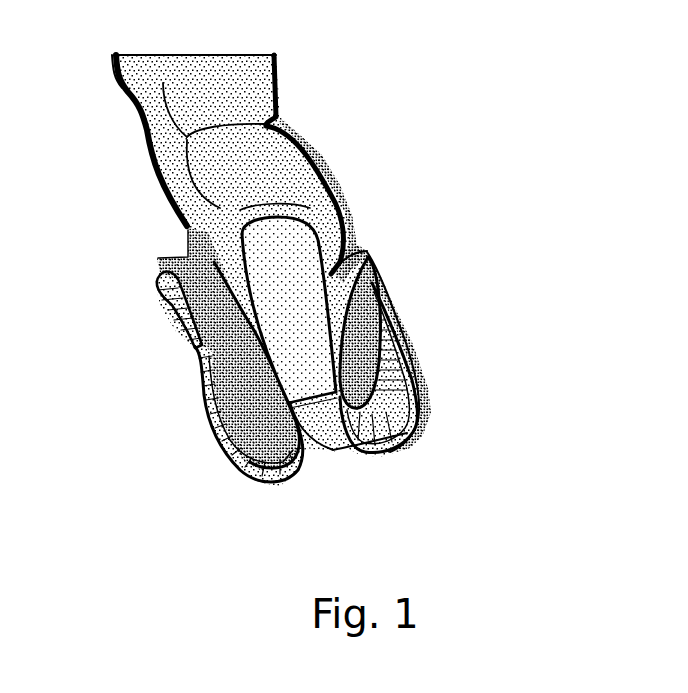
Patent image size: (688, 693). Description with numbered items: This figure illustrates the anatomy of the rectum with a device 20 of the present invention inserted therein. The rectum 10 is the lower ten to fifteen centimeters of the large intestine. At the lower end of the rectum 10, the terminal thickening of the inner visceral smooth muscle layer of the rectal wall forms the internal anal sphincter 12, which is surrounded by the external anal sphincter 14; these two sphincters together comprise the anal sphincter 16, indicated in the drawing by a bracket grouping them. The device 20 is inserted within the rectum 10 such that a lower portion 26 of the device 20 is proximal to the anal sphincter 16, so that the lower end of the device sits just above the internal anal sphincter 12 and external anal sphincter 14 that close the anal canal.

The rectum 10 is at (155, 428).
The device 20 is at (187, 227).
The lower portion 26 is at (307, 398).
The anal sphincter 16 is at (508, 342).
The external anal sphincter 14 is at (410, 356).
The internal anal sphincter 12 is at (403, 405).